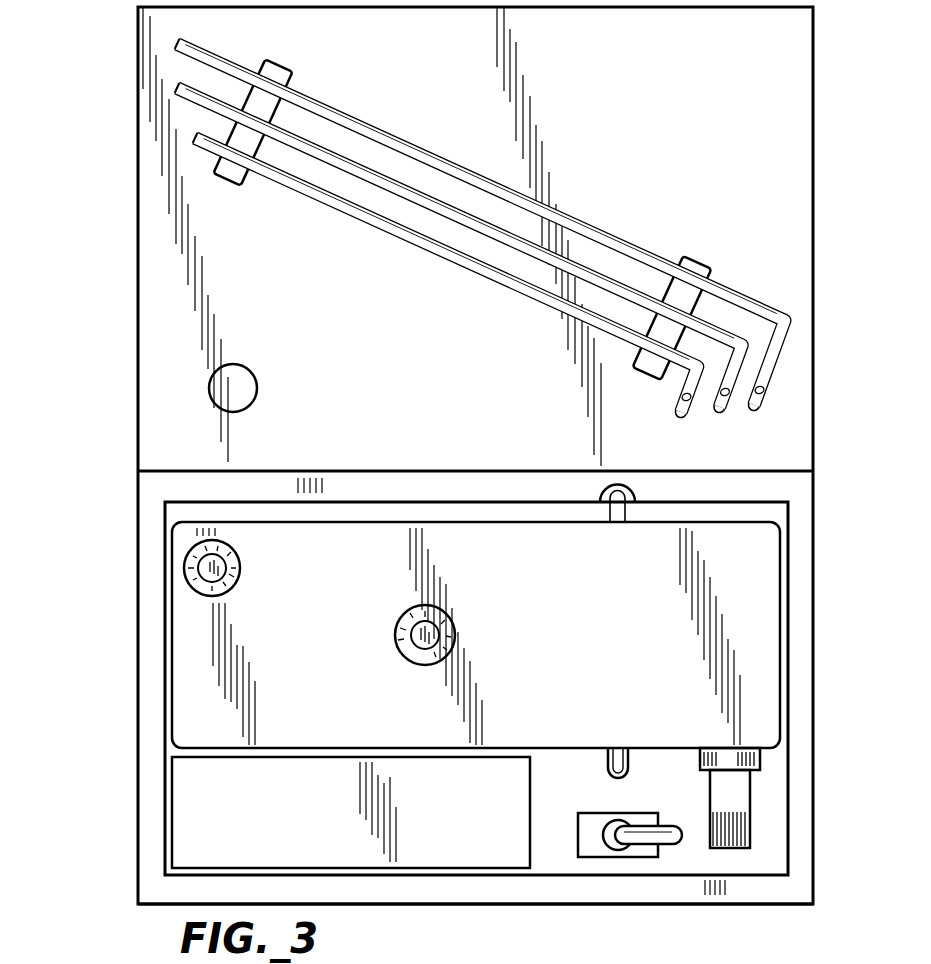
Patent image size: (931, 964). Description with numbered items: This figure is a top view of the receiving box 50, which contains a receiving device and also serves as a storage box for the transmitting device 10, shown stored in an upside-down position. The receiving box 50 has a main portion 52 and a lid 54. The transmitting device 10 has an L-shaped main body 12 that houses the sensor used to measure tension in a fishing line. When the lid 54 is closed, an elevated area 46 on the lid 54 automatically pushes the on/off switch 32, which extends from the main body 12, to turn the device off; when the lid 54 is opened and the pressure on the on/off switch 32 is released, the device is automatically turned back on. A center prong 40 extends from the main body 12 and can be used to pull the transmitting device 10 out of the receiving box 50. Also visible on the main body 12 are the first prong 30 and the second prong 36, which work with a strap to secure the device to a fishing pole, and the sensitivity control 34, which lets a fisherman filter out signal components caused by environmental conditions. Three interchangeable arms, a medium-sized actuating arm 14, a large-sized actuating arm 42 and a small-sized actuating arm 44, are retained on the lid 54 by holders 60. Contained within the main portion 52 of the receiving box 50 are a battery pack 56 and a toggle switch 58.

The transmitting device 10 is at (795, 637).
The main body 12 is at (783, 688).
The actuating arm 14 is at (203, 90).
The first prong 30 is at (606, 510).
The on/off switch 32 is at (238, 568).
The sensitivity control 34 is at (752, 835).
The second prong 36 is at (607, 762).
The center prong 40 is at (400, 652).
The large-sized actuating arm 42 is at (338, 116).
The small-sized actuating arm 44 is at (343, 205).
The elevated area 46 is at (256, 384).
The receiving box 50 is at (110, 468).
The main portion 52 is at (396, 905).
The lid 54 is at (813, 122).
The battery pack 56 is at (172, 777).
The toggle switch 58 is at (613, 857).
The holders 60 is at (223, 182).